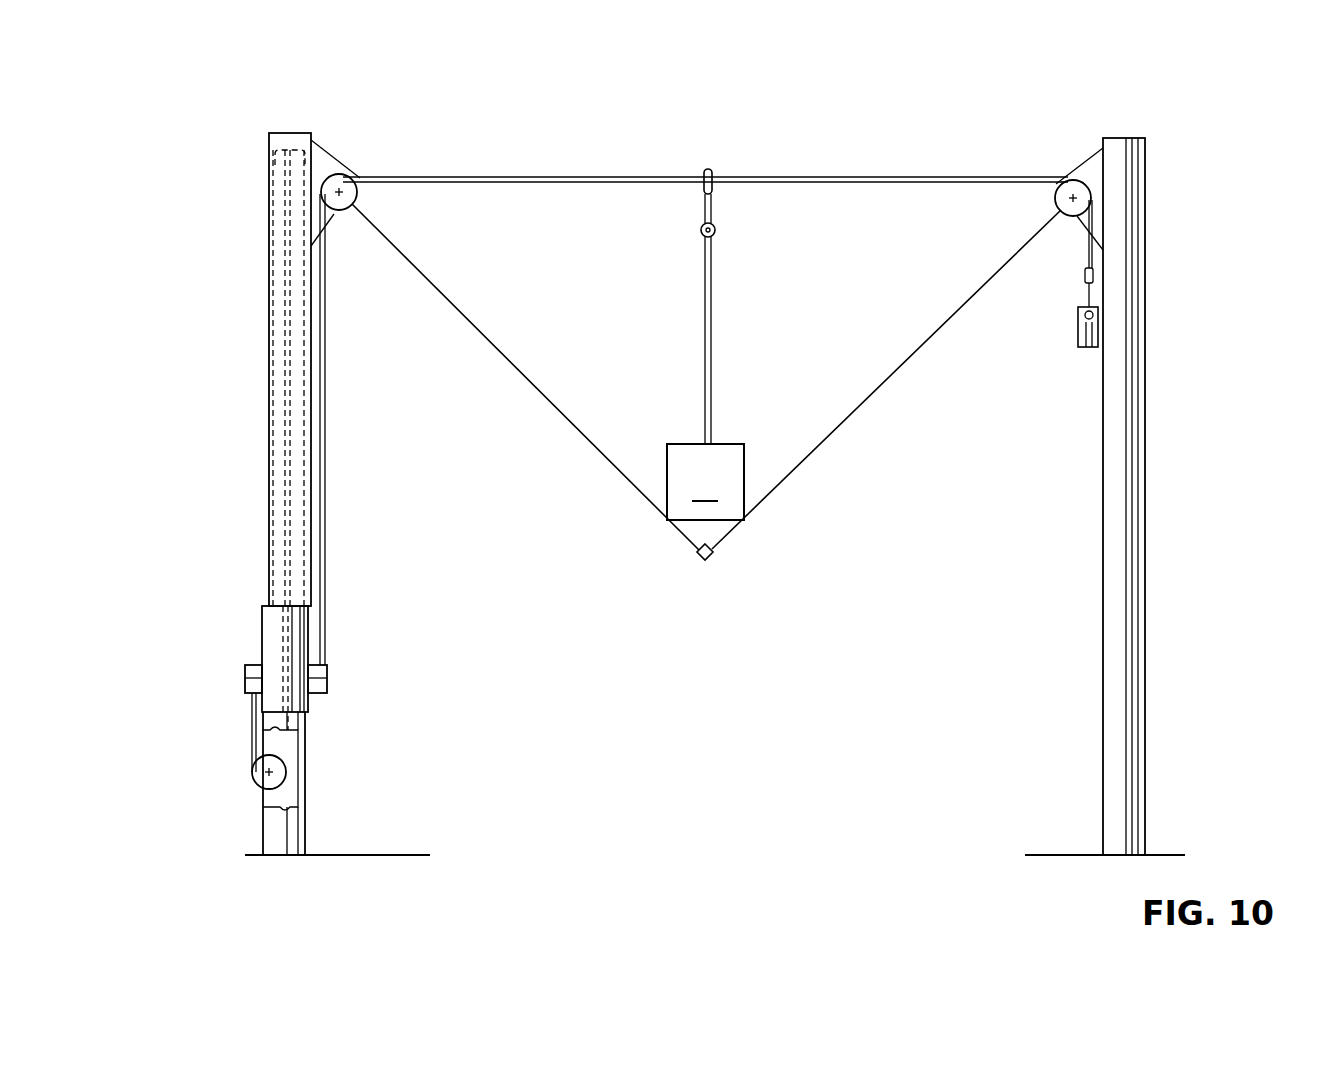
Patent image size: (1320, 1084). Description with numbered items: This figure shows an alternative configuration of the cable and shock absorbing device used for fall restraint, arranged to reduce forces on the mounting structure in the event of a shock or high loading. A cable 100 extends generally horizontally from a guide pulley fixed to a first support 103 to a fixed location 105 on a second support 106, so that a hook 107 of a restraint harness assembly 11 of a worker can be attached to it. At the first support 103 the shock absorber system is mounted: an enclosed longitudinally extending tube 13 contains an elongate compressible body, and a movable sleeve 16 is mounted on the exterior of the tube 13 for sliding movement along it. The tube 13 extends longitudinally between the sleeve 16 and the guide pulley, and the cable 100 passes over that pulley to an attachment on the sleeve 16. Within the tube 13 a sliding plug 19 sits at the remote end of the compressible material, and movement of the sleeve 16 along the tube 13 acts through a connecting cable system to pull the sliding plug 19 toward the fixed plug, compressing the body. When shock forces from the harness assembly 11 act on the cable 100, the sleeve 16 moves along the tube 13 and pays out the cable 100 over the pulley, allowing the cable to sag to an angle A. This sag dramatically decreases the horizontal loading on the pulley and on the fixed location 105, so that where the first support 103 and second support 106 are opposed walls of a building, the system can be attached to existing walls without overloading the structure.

The first support 103 is at (236, 322).
The sliding plug 19 is at (288, 158).
The tube 13 is at (268, 528).
The sleeve 16 is at (265, 640).
The cable 100 is at (642, 176).
The hook 107 is at (713, 193).
The fall restraint harness assembly 11 is at (712, 348).
The angle A is at (713, 553).
The second support 106 is at (1125, 495).
The fixed location 105 is at (1098, 330).